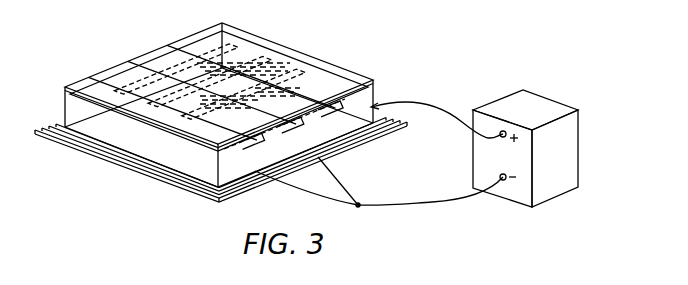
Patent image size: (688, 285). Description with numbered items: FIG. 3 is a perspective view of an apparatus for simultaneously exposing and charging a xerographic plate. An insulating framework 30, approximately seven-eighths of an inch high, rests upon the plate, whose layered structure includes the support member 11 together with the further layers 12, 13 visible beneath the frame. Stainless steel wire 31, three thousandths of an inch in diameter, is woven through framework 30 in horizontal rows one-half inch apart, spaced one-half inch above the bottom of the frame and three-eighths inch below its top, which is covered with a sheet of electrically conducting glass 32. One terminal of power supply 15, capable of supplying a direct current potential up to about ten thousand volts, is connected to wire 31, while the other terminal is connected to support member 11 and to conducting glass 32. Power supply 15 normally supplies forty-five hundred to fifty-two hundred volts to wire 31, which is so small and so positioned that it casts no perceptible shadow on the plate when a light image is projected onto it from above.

The support member 11 is at (209, 192).
The intermediate layer 12 is at (228, 188).
The conductive layer 13 is at (252, 176).
The power supply 15 is at (555, 103).
The insulating framework 30 is at (374, 104).
The stainless steel wire 31 is at (140, 82).
The electrically conducting glass 32 is at (257, 37).